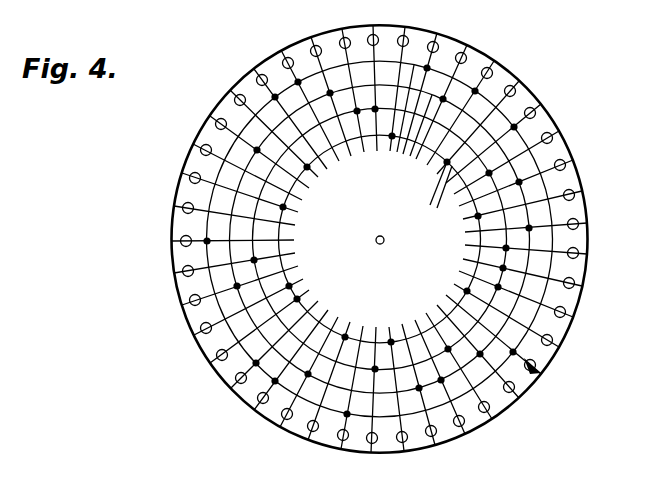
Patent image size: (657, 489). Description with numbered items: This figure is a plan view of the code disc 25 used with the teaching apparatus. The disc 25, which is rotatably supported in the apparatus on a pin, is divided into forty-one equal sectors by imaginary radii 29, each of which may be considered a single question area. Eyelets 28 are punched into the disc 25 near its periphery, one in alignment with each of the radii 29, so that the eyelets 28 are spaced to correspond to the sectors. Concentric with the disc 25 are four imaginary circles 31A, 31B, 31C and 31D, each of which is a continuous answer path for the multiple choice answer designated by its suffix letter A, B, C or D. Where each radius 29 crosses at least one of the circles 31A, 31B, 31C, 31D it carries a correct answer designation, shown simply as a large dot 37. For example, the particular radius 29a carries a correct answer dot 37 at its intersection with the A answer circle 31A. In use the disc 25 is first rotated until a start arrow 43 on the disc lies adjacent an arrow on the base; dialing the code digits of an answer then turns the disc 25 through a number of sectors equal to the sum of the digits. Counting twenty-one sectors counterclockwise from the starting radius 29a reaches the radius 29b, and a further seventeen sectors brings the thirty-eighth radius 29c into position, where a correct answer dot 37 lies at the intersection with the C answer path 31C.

The disc 25 is at (204, 352).
The eyelets 28 is at (461, 427).
The imaginary radii 29 is at (498, 386).
The imaginary radius 29a is at (216, 245).
The radius 29b is at (565, 226).
The radius 29c is at (217, 150).
The imaginary circle 31A is at (413, 66).
The imaginary circle 31B is at (436, 96).
The imaginary circle 31C is at (445, 164).
The imaginary circle 31D is at (448, 168).
The large dot 37 is at (257, 372).
The start arrow 43 is at (542, 370).